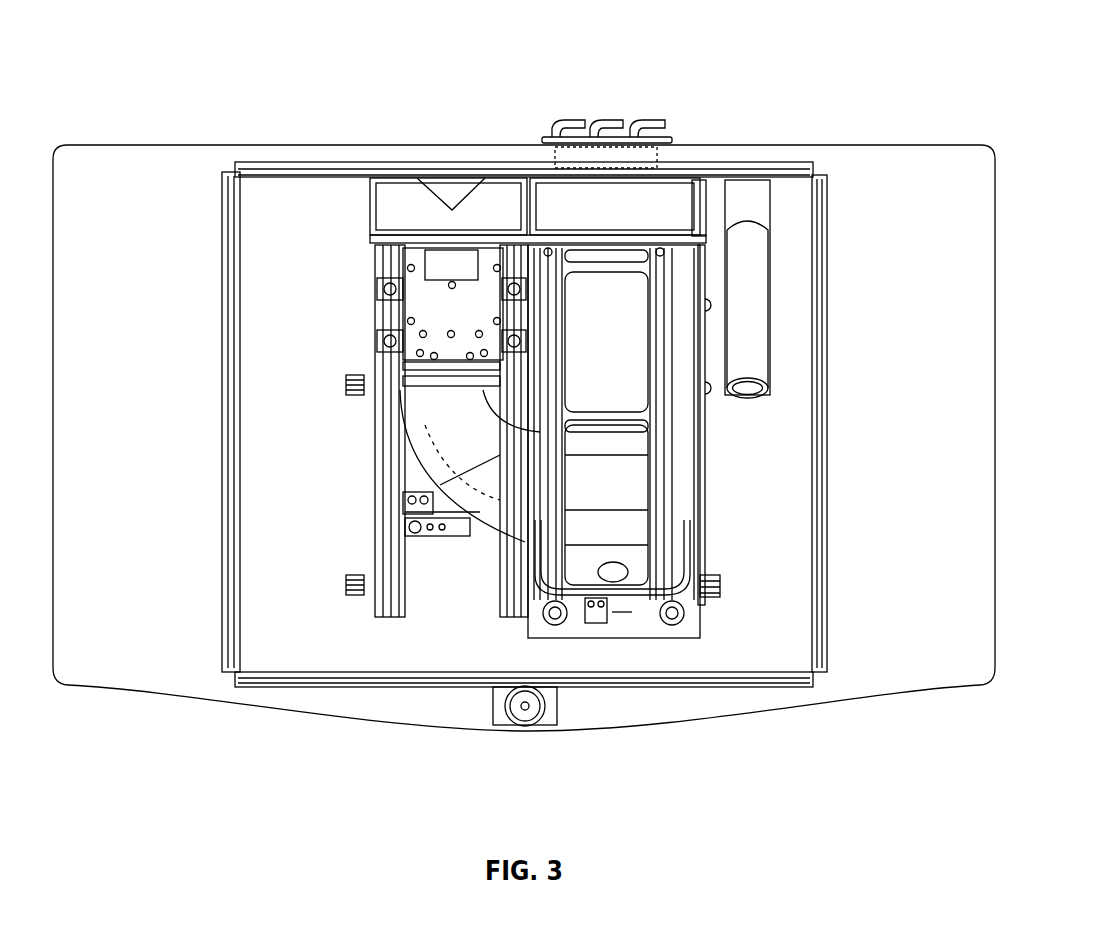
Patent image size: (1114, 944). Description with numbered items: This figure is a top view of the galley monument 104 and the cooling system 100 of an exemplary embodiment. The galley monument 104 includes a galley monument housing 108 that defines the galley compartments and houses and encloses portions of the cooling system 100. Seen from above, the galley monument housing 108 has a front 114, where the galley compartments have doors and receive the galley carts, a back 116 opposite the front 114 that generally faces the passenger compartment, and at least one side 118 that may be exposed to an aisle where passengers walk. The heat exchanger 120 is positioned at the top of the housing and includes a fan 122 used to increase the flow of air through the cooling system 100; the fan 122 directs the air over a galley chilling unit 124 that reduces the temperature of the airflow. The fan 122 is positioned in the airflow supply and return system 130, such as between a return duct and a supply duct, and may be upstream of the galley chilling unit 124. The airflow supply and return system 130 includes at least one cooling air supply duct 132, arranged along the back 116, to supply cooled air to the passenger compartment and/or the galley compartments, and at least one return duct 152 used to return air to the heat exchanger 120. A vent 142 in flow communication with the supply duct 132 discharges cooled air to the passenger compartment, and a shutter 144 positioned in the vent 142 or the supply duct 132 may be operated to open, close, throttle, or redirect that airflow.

The cooling system 100 is at (650, 40).
The galley monument 104 is at (1000, 265).
The galley monument housing 108 is at (945, 690).
The front 114 is at (327, 720).
The back 116 is at (930, 146).
The side 118 is at (995, 411).
The heat exchanger 120 is at (830, 457).
The fan 122 is at (422, 310).
The galley chilling unit 124 is at (632, 493).
The airflow supply and return system 130 is at (490, 148).
The cooling air supply duct 132 is at (678, 195).
The vent 142 is at (560, 157).
The shutter 144 is at (578, 118).
The return duct 152 is at (397, 195).